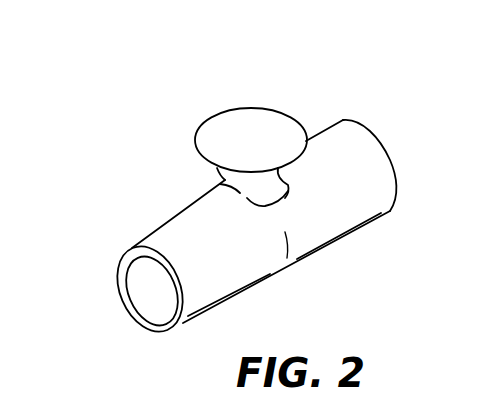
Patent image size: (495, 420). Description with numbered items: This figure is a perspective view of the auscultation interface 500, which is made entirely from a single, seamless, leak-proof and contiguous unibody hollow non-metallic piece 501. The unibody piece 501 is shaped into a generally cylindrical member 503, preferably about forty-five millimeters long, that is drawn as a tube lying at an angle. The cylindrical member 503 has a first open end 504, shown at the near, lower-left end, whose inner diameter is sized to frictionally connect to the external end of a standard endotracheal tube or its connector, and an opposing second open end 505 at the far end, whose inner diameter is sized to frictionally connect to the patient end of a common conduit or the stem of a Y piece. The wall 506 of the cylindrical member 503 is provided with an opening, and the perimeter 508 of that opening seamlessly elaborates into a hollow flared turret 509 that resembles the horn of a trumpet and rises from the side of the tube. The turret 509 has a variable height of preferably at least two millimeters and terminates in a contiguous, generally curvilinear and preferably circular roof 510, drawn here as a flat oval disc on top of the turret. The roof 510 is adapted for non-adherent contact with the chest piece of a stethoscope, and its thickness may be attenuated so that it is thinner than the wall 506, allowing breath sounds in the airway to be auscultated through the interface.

The auscultation interface 500 is at (338, 89).
The hollow non-metallic piece 501 is at (229, 281).
The cylindrical member 503 is at (377, 190).
The first open end 504 is at (148, 297).
The second open end 505 is at (388, 148).
The wall 506 is at (131, 256).
The perimeter 508 is at (285, 198).
The hollow flared turret 509 is at (226, 180).
The roof 510 is at (271, 154).